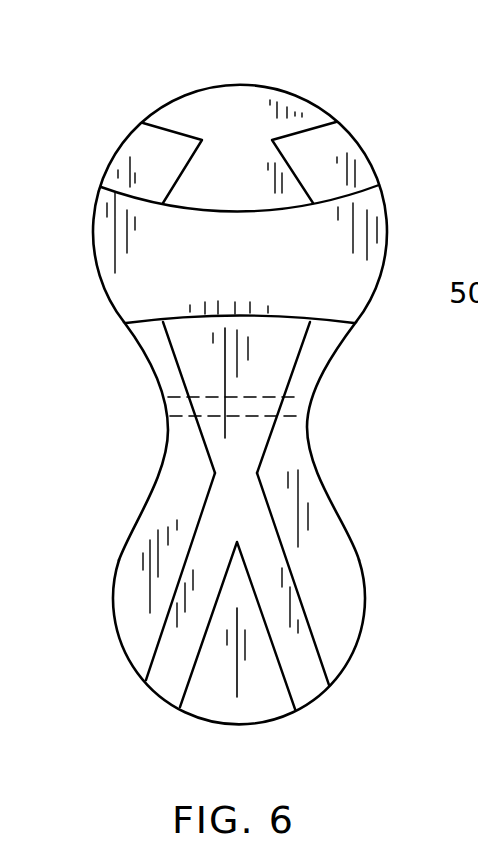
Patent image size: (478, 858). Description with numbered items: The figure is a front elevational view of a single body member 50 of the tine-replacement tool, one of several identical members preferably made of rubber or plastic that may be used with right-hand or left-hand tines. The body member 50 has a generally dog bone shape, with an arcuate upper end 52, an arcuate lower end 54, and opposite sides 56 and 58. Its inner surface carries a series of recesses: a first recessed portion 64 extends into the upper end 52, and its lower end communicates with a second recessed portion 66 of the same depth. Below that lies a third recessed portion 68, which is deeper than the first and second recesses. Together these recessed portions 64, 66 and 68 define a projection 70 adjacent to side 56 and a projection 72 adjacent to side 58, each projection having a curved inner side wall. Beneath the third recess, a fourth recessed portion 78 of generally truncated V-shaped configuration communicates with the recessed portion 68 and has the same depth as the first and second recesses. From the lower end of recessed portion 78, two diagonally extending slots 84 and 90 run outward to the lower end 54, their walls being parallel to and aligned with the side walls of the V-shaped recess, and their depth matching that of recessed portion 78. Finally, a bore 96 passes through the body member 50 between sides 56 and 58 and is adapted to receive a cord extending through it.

The body member 50 is at (337, 100).
The upper end 52 is at (257, 73).
The lower end 54 is at (247, 735).
The side 56 is at (147, 457).
The side 58 is at (320, 445).
The first recessed portion 64 is at (244, 123).
The second recessed portion 66 is at (232, 190).
The third recessed portion 68 is at (247, 266).
The projection 70 is at (168, 168).
The projection 72 is at (328, 171).
The fourth recessed portion 78 is at (275, 370).
The slot 84 is at (173, 672).
The slot 90 is at (292, 648).
The bore 96 is at (303, 406).